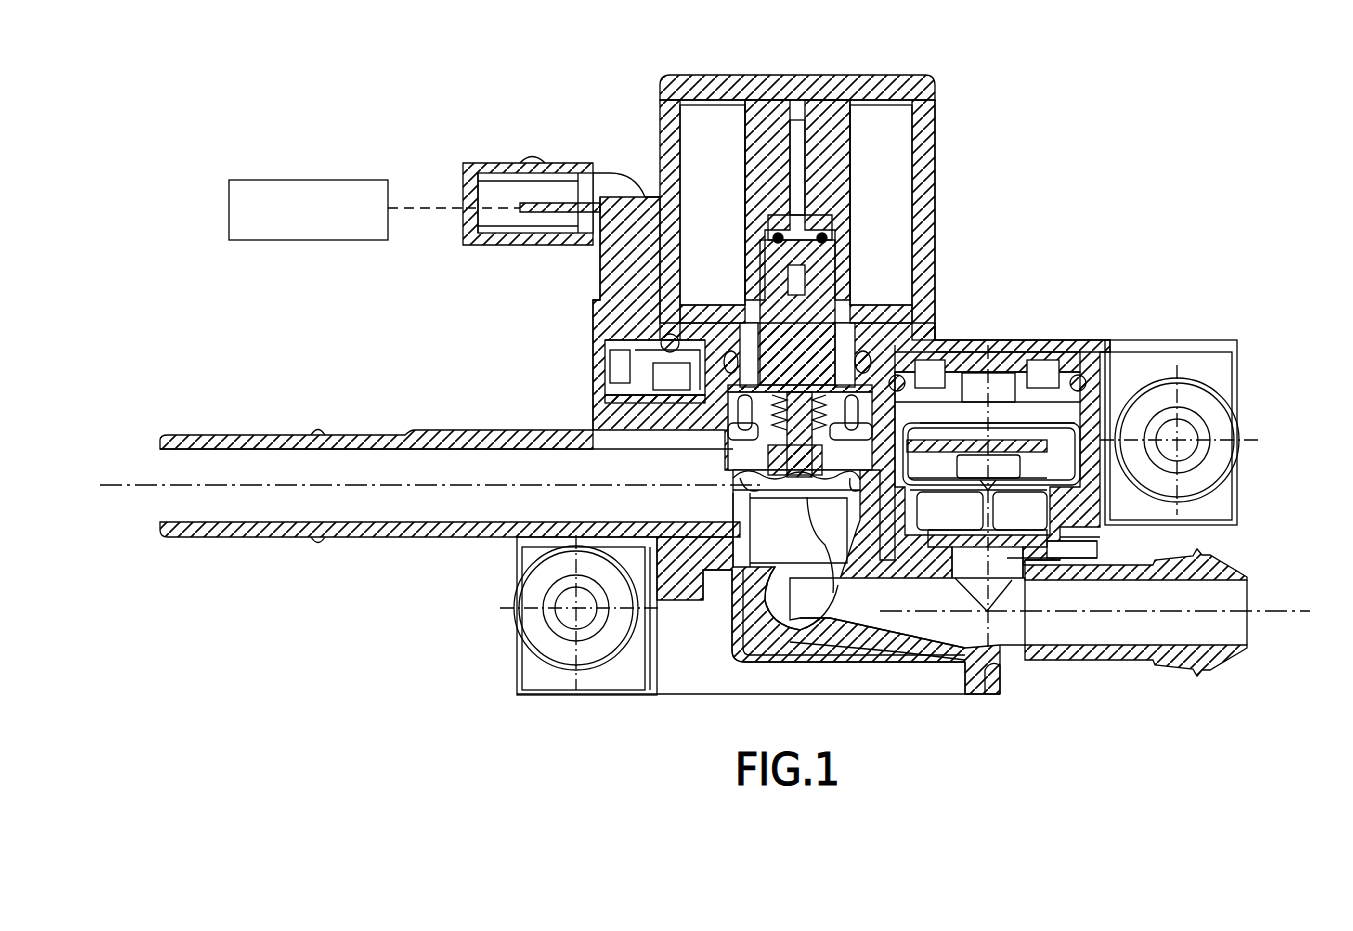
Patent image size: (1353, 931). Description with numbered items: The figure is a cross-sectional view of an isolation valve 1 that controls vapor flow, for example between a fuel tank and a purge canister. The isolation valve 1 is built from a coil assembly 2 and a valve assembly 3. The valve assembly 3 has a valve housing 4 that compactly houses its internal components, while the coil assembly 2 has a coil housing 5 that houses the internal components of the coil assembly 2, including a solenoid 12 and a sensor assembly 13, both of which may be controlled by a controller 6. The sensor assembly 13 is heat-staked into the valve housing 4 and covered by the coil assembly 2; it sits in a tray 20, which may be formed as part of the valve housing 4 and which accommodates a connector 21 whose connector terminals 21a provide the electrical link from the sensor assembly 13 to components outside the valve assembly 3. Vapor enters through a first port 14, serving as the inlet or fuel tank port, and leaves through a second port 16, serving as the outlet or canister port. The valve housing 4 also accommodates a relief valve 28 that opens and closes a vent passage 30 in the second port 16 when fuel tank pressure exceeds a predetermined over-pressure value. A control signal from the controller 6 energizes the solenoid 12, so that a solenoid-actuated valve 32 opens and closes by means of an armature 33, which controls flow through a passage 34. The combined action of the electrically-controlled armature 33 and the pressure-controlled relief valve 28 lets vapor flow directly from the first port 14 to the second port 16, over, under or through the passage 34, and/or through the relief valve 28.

The isolation valve 1 is at (1048, 143).
The coil assembly 2 is at (937, 175).
The valve assembly 3 is at (1038, 336).
The valve housing 4 is at (1112, 345).
The coil housing 5 is at (686, 78).
The controller 6 is at (345, 180).
The solenoid 12 is at (898, 130).
The sensor assembly 13 is at (612, 396).
The first port 14 is at (428, 433).
The second port 16 is at (1198, 668).
The tray 20 is at (614, 412).
The connector 21 is at (490, 190).
The connector terminals 21a is at (540, 203).
The relief valve 28 is at (1025, 495).
The vent passage 30 is at (1010, 557).
The solenoid-actuated valve 32 is at (812, 500).
The armature 33 is at (797, 120).
The passage 34 is at (748, 492).